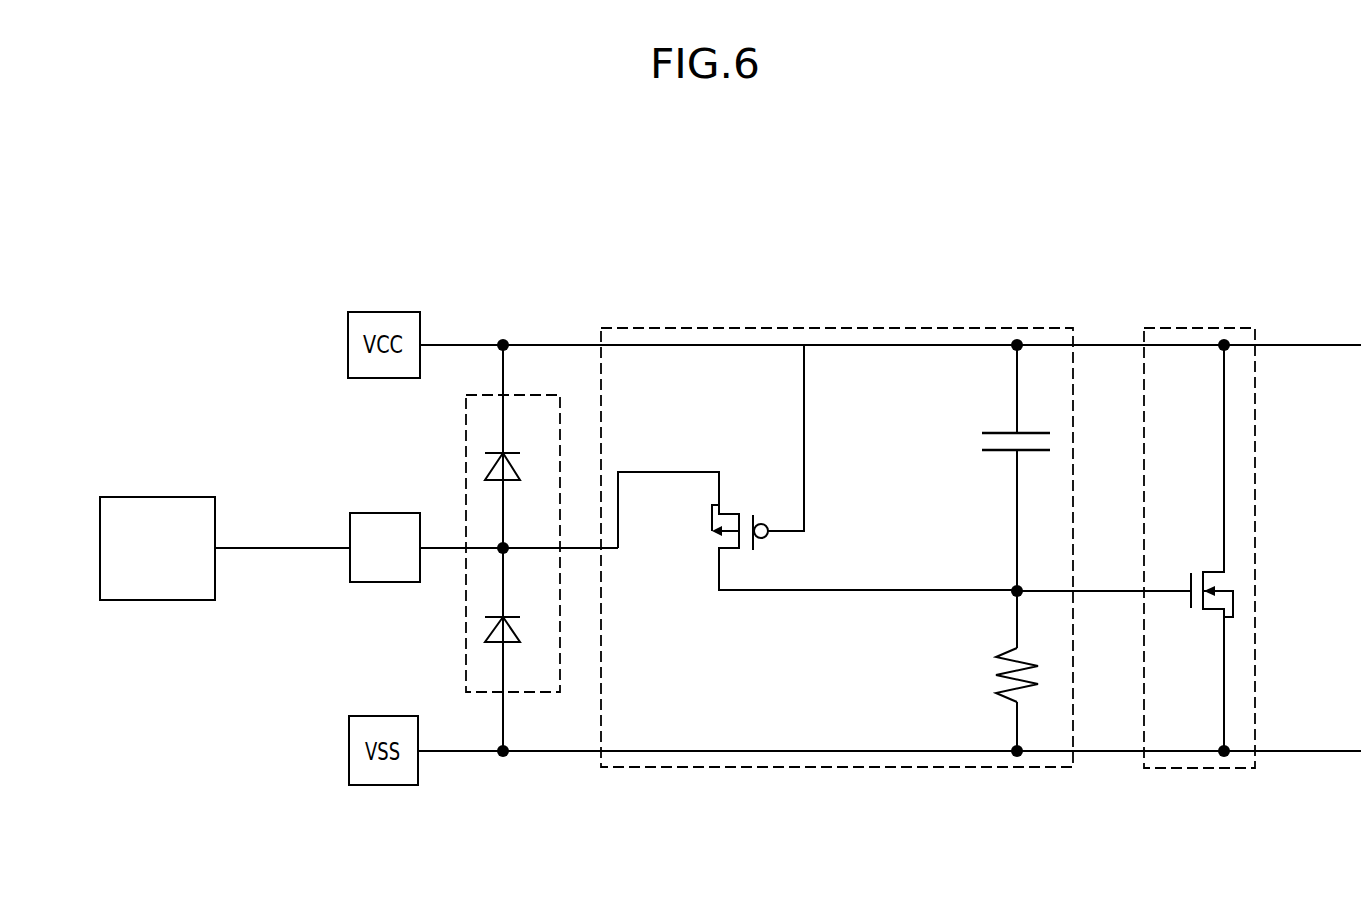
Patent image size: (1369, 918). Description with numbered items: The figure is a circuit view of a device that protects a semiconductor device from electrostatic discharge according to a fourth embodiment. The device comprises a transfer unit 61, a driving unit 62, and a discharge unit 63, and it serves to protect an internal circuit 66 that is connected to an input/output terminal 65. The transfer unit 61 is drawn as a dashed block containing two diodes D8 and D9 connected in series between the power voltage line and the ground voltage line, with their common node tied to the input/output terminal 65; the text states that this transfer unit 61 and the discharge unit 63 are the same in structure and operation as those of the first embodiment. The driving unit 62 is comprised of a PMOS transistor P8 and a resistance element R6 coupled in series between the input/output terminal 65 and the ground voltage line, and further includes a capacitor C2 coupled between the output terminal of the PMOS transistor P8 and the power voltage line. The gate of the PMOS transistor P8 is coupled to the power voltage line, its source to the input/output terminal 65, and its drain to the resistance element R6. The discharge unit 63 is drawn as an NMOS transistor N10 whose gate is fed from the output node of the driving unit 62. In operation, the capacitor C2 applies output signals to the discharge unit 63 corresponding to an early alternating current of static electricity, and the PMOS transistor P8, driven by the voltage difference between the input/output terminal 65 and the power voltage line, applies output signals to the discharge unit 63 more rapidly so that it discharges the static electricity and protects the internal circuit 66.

The transfer unit 61 is at (516, 508).
The driving unit 62 is at (837, 507).
The discharge unit 63 is at (1199, 508).
The input/output terminal 65 is at (383, 513).
The internal circuit 66 is at (160, 497).
The diode D8 is at (511, 482).
The diode D9 is at (511, 645).
The PMOS transistor P8 is at (817, 467).
The capacitor C2 is at (1012, 468).
The resistance element R6 is at (999, 671).
The NMOS transistor N10 is at (1199, 328).